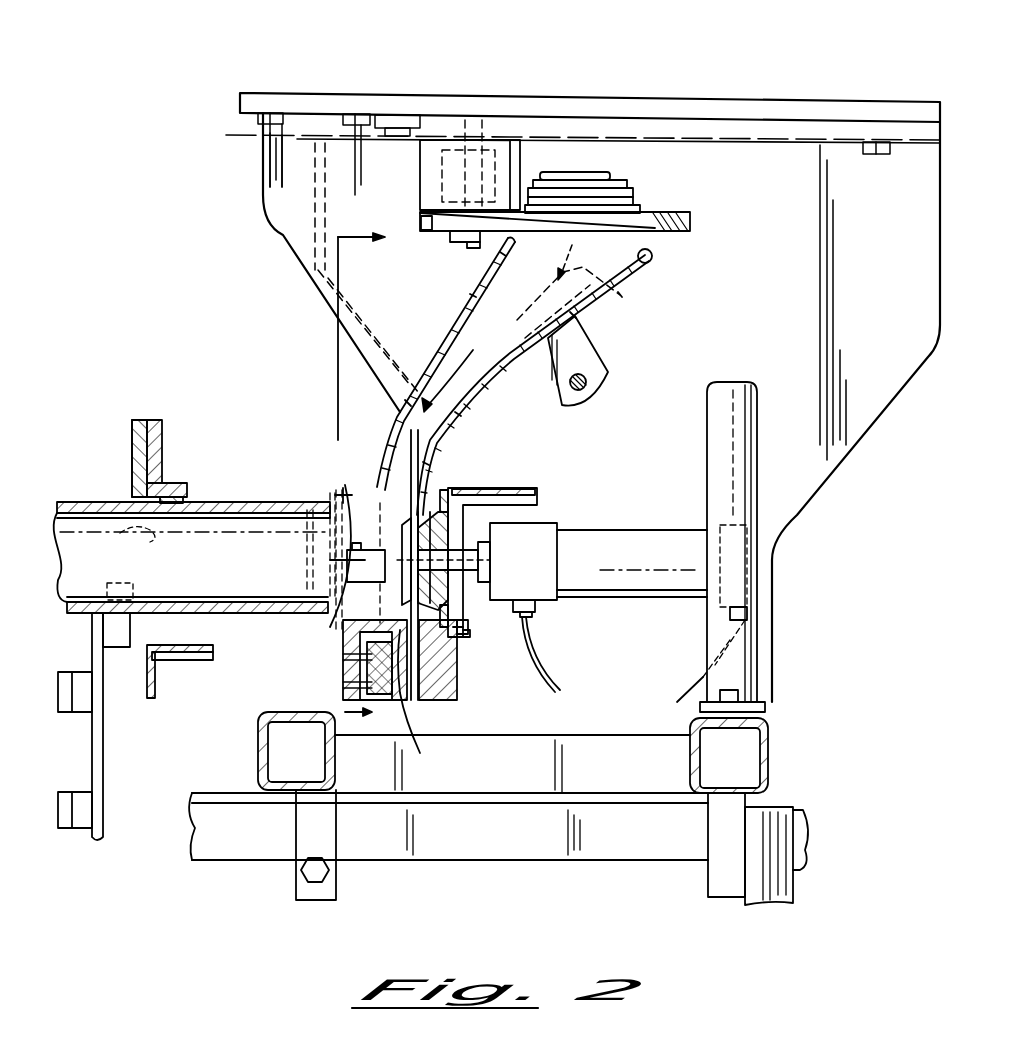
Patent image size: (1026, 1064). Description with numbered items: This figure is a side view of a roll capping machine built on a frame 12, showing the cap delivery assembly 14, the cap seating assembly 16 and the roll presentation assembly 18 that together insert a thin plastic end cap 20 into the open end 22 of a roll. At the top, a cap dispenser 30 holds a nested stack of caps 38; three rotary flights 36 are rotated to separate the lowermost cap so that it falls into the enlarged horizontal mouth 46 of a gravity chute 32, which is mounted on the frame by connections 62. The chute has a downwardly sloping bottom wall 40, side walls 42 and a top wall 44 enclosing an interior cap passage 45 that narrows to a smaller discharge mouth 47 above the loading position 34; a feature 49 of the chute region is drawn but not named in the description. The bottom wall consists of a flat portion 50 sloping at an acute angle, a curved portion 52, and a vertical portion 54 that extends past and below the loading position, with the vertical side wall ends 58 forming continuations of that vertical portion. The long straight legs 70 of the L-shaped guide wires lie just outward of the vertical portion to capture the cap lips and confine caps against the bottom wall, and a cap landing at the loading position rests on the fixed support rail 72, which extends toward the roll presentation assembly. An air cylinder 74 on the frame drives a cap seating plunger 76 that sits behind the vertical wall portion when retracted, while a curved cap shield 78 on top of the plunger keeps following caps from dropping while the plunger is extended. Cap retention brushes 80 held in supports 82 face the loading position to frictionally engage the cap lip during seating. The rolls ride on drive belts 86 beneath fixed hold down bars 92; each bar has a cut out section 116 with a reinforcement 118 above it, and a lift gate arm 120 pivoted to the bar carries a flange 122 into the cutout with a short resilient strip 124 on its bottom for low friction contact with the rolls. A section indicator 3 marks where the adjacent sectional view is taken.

The frame 12 is at (491, 860).
The cap delivery assembly 14 is at (300, 58).
The cap seating assembly 16 is at (586, 630).
The roll presentation assembly 18 is at (133, 386).
The end cap 20 is at (401, 532).
The open end 22 is at (327, 517).
The cap dispenser 30 is at (419, 179).
The gravity chute 32 is at (462, 292).
The loading position 34 is at (400, 496).
The rotary flights 36 is at (425, 235).
The nested stack of caps 38 is at (600, 166).
The bottom wall 40 is at (620, 292).
The side walls 42 is at (541, 274).
The top wall 44 is at (478, 273).
The interior cap passage 45 is at (490, 346).
The enlarged horizontal mouth 46 is at (655, 258).
The discharge mouth 47 is at (425, 462).
The hopper 49 is at (523, 318).
The flat portion 50 is at (573, 313).
The curved portion 52 is at (453, 410).
The vertical portion 54 is at (418, 703).
The vertical side wall ends 58 is at (417, 413).
The connections 62 is at (612, 364).
The long straight leg 70 is at (412, 432).
The fixed support rail 72 is at (427, 703).
The air cylinder 74 is at (660, 540).
The cap seating plunger 76 is at (445, 492).
The curved cap shield 78 is at (520, 485).
The cap retention brushes 80 is at (362, 573).
The supports 82 is at (347, 494).
The drive belts 86 is at (175, 652).
The fixed hold down bars 92 is at (127, 527).
The cut out section 116 is at (158, 482).
The reinforcement 118 is at (152, 420).
The arm 120 is at (132, 457).
The flange 122 is at (174, 487).
The short resilient strip 124 is at (182, 500).
The section line of FIG. 3 is at (363, 482).